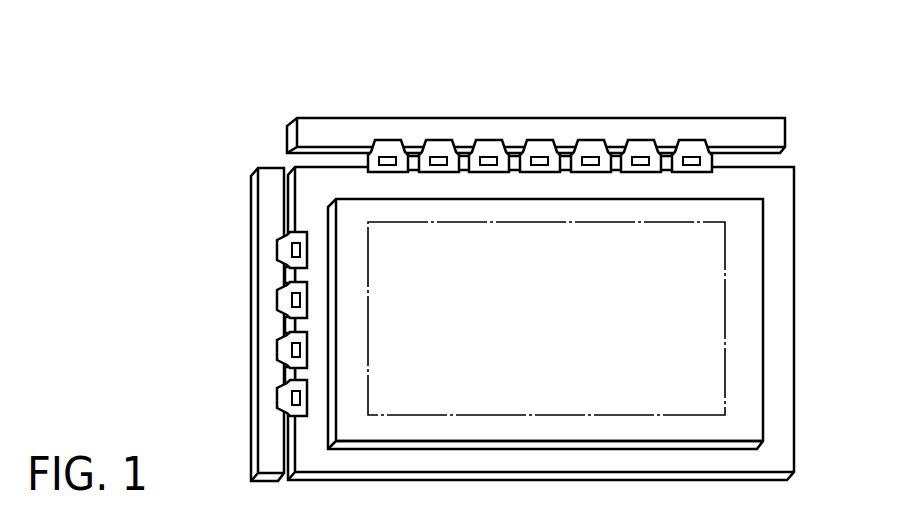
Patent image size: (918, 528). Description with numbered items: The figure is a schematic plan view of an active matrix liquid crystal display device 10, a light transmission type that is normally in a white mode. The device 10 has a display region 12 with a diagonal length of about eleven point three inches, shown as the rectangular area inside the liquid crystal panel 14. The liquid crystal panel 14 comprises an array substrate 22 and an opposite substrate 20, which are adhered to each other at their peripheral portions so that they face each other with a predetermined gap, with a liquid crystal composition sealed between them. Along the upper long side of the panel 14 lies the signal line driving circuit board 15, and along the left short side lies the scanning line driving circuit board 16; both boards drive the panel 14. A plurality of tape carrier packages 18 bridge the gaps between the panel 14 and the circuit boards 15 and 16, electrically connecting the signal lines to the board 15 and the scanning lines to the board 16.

The liquid crystal display device 10 is at (660, 88).
The display region 12 is at (717, 248).
The liquid crystal panel 14 is at (800, 184).
The signal line driving circuit board 15 is at (740, 133).
The scanning line driving circuit board 16 is at (270, 438).
The tape carrier package 18 is at (391, 140).
The opposite substrate 20 is at (775, 347).
The array substrate 22 is at (747, 405).